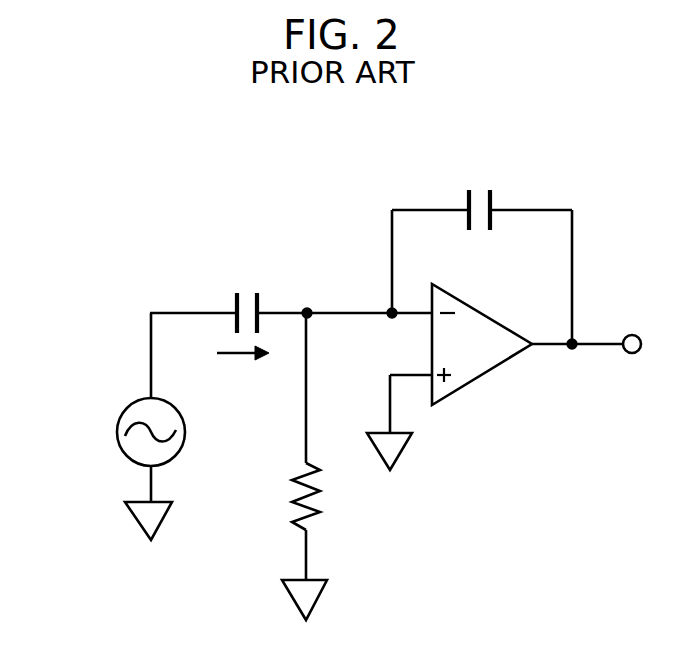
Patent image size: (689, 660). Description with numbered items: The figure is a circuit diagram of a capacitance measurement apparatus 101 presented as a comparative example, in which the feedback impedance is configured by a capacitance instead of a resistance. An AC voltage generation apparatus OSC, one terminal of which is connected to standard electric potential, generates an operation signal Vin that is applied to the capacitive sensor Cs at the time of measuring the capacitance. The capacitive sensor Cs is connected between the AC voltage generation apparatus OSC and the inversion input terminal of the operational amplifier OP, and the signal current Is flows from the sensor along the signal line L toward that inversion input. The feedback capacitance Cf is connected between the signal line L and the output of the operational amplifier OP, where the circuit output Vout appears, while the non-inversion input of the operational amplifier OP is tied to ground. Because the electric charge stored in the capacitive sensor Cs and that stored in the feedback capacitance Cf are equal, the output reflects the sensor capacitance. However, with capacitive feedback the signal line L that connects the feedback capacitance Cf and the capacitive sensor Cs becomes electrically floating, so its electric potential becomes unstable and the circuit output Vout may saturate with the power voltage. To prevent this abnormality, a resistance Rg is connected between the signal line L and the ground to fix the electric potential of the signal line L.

The capacitance measurement apparatus 101 is at (636, 124).
The capacitive sensor Cs is at (244, 294).
The feedback capacitance Cf is at (476, 191).
The signal current Is is at (243, 373).
The signal line L is at (356, 294).
The operational amplifier OP is at (482, 349).
The resistance Rg is at (328, 496).
The AC voltage generation apparatus OSC is at (106, 432).
The operation signal Vin is at (109, 349).
The circuit output Vout is at (639, 325).